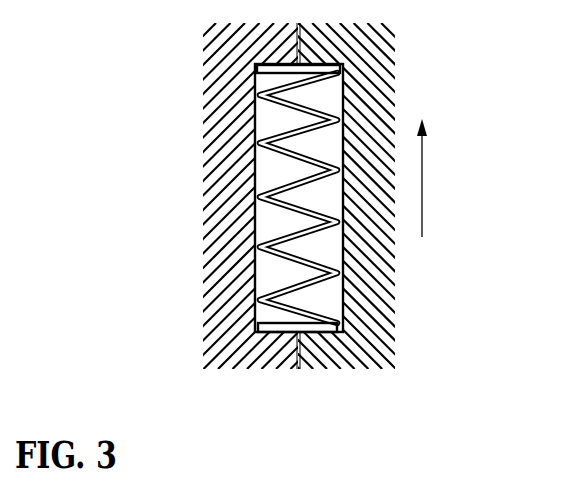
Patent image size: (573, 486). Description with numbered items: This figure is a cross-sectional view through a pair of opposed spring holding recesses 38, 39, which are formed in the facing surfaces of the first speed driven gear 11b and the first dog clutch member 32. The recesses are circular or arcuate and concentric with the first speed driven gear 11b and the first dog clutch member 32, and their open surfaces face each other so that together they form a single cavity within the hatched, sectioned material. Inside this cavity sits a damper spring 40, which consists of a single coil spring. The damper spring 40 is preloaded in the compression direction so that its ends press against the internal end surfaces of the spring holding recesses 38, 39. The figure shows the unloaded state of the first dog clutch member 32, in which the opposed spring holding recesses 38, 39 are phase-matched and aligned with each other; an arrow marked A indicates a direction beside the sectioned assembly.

The first speed driven gear 11b is at (380, 75).
The first dog clutch member 32 is at (210, 153).
The spring holding recess 38 is at (338, 92).
The spring holding recess 39 is at (257, 233).
The damper spring 40 is at (322, 282).
The direction A is at (423, 190).